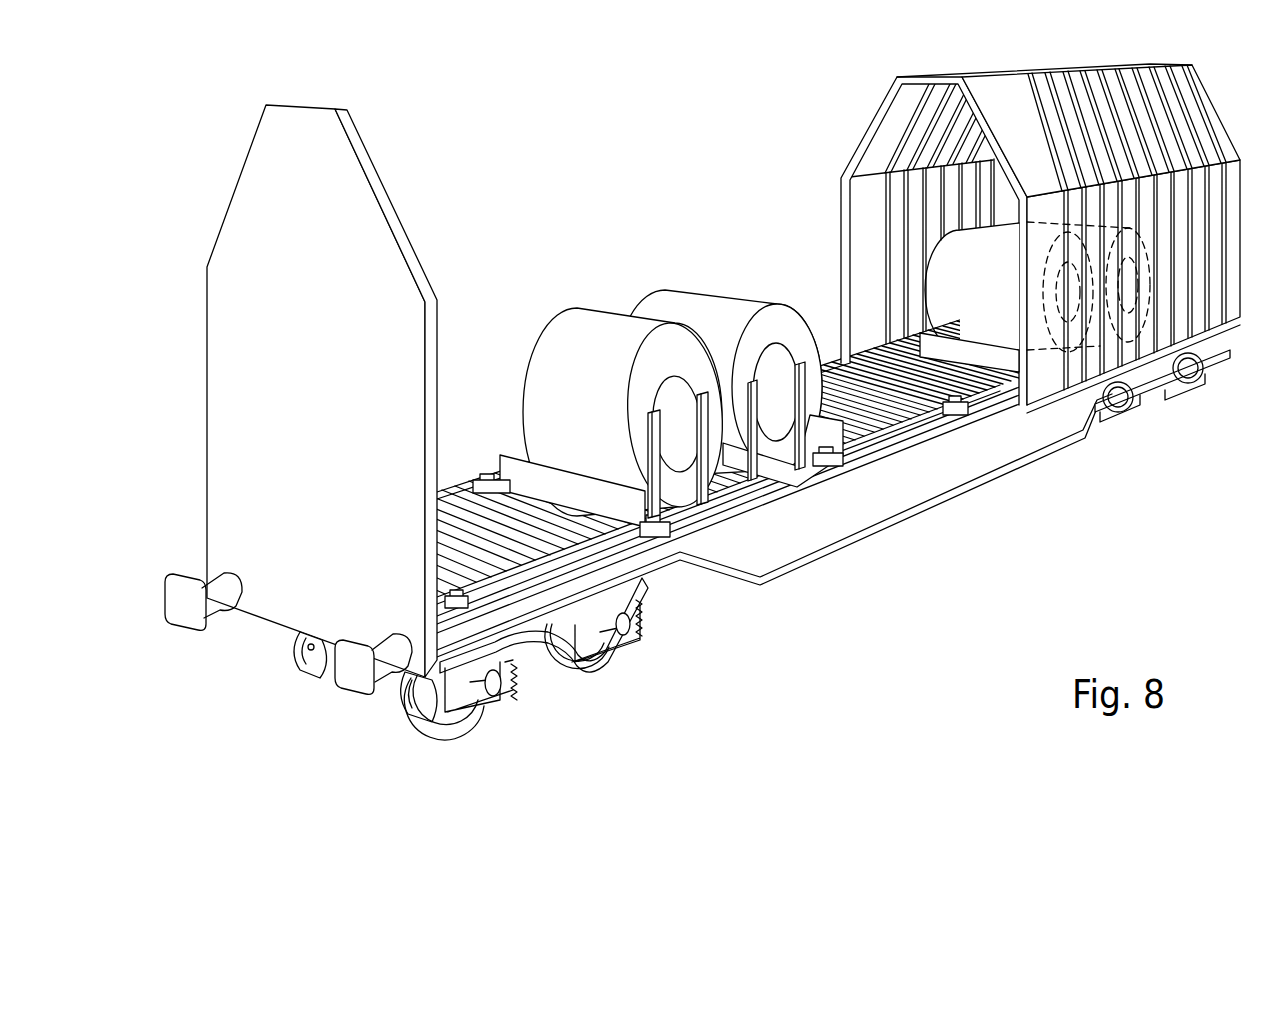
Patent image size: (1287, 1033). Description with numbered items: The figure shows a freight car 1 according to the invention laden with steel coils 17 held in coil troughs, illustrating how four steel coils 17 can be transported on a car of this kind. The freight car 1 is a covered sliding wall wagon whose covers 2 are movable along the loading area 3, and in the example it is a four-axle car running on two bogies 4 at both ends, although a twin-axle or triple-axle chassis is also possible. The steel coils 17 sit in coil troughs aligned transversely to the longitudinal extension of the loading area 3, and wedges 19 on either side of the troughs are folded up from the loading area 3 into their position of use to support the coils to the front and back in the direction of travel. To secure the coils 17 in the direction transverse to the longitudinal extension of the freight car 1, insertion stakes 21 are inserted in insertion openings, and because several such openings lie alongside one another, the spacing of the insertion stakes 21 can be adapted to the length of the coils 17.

The freight car 1 is at (740, 230).
The covers 2 is at (945, 120).
The loading area 3 is at (587, 665).
The bogies 4 is at (1163, 395).
The steel coil 17 is at (565, 372).
The wedges 19 is at (648, 517).
The insertion stakes 21 is at (700, 455).